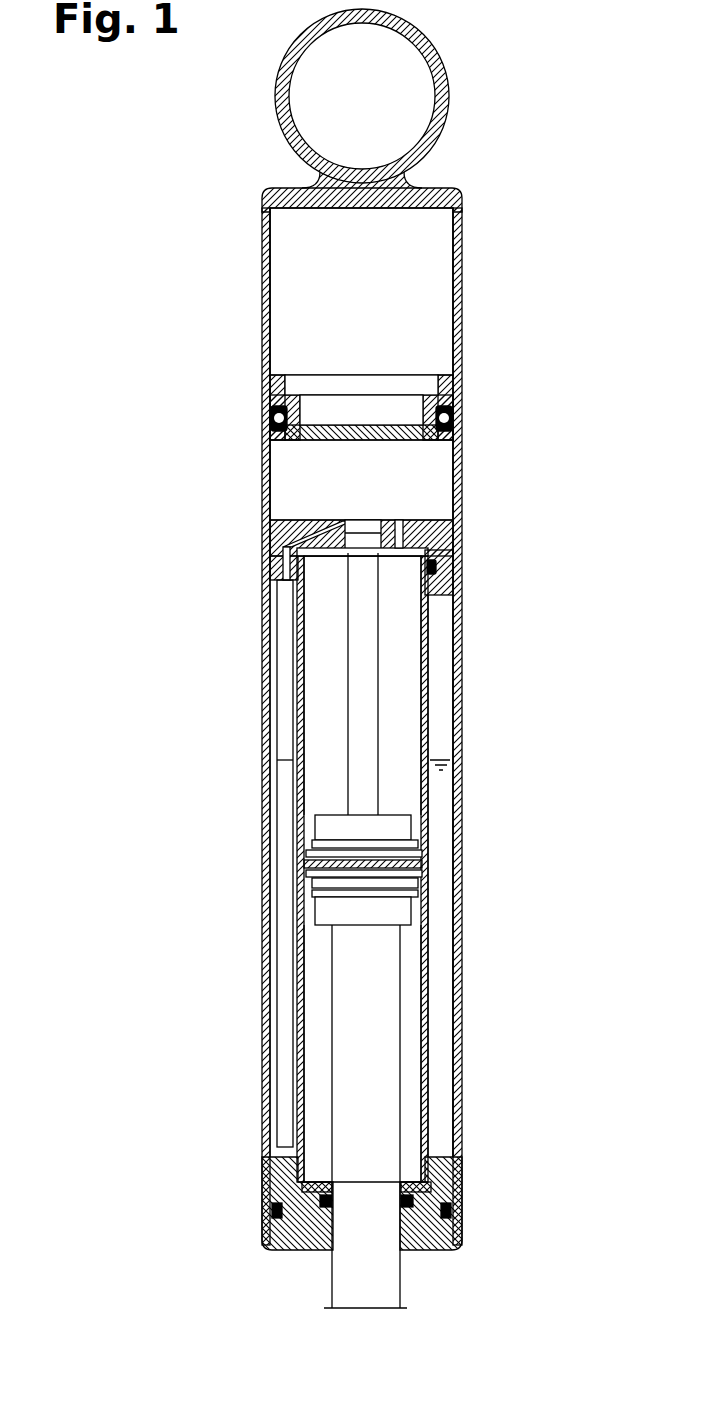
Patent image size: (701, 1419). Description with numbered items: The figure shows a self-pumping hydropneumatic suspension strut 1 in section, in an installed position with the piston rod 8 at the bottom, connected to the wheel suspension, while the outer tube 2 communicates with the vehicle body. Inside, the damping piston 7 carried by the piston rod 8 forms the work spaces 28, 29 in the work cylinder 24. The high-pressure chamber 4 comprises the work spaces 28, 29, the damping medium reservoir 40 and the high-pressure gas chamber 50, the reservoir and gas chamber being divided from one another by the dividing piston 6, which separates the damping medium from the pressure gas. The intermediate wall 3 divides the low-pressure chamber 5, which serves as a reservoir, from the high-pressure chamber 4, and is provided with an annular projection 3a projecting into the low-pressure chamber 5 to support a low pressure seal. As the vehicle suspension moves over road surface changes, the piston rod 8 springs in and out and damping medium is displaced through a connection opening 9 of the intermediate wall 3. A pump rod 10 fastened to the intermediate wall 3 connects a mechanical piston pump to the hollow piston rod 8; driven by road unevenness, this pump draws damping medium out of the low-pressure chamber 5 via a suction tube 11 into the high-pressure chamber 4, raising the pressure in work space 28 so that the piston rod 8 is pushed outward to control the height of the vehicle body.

The suspension strut 1 is at (486, 942).
The outer tube 2 is at (462, 838).
The intermediate wall 3 is at (455, 548).
The annular projection 3a is at (457, 593).
The high-pressure chamber 4 is at (320, 308).
The low-pressure chamber 5 is at (440, 719).
The dividing piston 6 is at (455, 393).
The damping piston 7 is at (420, 864).
The piston rod 8 is at (375, 1078).
The connection opening 9 is at (405, 521).
The pump rod 10 is at (365, 633).
The suction tube 11 is at (288, 1076).
The work cylinder 24 is at (430, 1035).
The work space 28 is at (400, 679).
The work space 29 is at (410, 982).
The damping medium reservoir 40 is at (422, 488).
The high-pressure gas chamber 50 is at (423, 320).